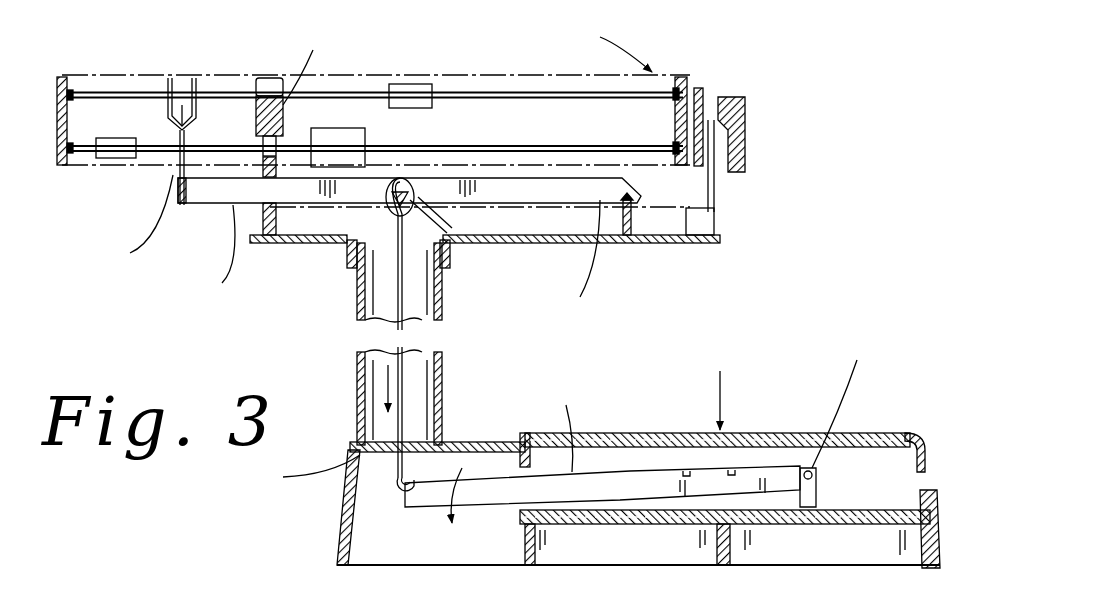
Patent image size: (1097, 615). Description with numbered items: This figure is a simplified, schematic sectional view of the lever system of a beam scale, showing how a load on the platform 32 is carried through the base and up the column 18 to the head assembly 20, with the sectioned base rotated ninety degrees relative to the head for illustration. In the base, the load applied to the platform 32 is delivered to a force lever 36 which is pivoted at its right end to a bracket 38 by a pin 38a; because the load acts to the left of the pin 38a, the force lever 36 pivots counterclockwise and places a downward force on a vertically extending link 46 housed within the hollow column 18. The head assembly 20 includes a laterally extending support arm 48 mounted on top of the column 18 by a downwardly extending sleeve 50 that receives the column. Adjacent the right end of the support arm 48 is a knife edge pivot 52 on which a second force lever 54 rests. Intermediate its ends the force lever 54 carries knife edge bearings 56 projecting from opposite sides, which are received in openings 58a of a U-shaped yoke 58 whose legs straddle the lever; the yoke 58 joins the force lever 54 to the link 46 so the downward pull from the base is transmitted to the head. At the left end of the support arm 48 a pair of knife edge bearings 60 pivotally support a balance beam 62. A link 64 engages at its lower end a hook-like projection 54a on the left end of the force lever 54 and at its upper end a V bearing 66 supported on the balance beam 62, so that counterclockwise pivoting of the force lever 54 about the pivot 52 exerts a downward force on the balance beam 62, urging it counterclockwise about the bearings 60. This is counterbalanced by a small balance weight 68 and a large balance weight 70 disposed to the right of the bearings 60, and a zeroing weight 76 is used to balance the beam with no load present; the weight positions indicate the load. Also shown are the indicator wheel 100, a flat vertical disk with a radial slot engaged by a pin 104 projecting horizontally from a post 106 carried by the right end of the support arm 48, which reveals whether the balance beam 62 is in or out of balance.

The head assembly 20 is at (712, 48).
The column 18 is at (357, 368).
The platform 32 is at (783, 432).
The force lever 36 is at (482, 465).
The bracket 38 is at (818, 494).
The pin 38a is at (830, 468).
The link 46 is at (430, 375).
The support arm 48 is at (697, 247).
The sleeve 50 is at (353, 265).
The knife edge pivot 52 is at (653, 243).
The force lever 54 is at (510, 190).
The hook-like projection 54a is at (176, 205).
The knife edge bearings 56 is at (447, 233).
The U-shaped yoke 58 is at (343, 240).
The openings 58a is at (450, 247).
The knife edge bearings 60 is at (250, 135).
The balance beam 62 is at (80, 163).
The link 64 is at (178, 170).
The V bearing 66 is at (150, 125).
The small balance weight 68 is at (418, 108).
The large balance weight 70 is at (350, 159).
The zeroing weight 76 is at (117, 160).
The indicator wheel 100 is at (708, 92).
The pin 104 is at (690, 85).
The post 106 is at (716, 185).